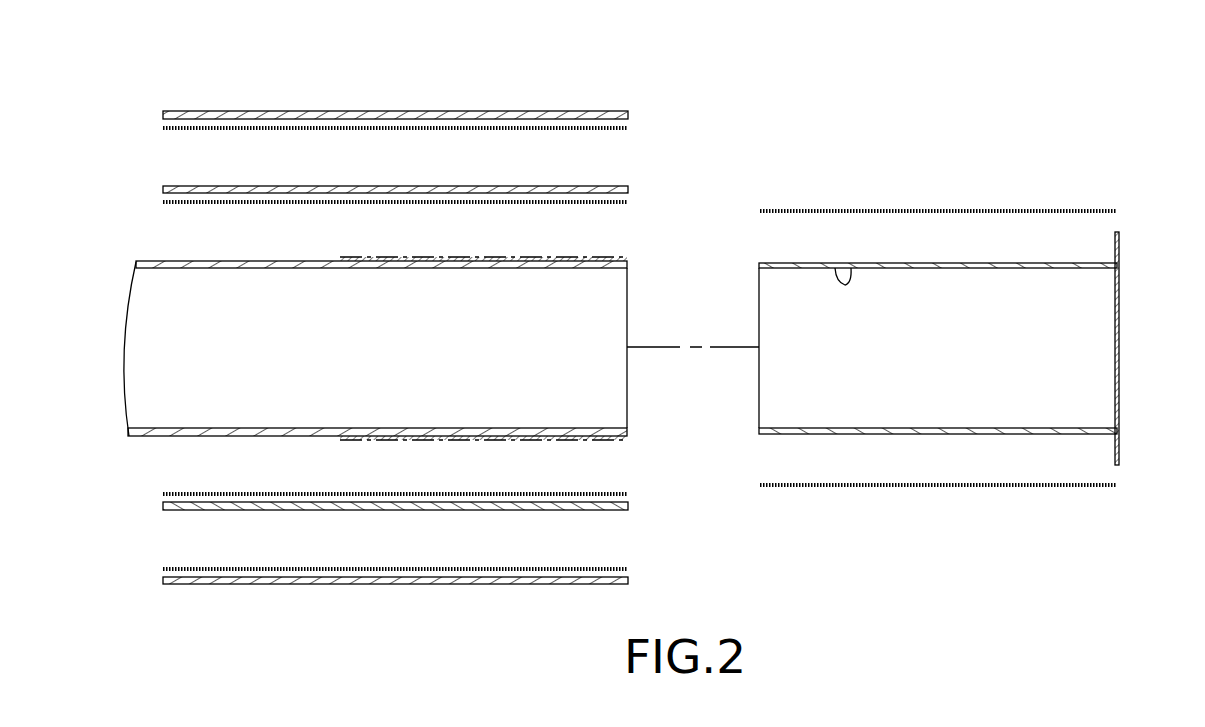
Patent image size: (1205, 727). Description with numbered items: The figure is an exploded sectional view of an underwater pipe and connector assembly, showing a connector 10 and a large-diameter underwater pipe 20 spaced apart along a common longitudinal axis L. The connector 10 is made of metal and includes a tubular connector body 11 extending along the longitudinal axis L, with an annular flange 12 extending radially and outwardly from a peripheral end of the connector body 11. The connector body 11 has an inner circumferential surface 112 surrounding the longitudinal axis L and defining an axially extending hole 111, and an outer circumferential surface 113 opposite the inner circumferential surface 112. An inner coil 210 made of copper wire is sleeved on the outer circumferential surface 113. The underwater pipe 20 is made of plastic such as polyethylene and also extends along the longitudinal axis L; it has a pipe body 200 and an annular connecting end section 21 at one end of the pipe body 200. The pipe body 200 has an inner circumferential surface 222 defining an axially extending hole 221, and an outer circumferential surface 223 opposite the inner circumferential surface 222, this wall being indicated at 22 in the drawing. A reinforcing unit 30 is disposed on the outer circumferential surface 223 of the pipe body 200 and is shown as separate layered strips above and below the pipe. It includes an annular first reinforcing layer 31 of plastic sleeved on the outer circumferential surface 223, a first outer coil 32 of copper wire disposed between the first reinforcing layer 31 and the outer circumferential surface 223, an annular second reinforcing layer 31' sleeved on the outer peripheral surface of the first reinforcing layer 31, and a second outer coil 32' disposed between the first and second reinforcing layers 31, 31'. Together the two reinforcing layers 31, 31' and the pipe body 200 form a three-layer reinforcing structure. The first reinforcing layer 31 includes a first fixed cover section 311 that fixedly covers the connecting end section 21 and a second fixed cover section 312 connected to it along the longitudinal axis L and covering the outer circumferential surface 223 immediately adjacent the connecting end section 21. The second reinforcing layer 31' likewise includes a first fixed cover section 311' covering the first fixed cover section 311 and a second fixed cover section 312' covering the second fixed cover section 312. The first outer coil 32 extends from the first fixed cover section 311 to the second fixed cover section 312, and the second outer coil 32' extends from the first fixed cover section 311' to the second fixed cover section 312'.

The connector 10 is at (976, 315).
The connector body 11 is at (1071, 266).
The annular flange 12 is at (1120, 250).
The axially extending hole 111 is at (1077, 350).
The inner circumferential surface 112 is at (851, 268).
The outer circumferential surface 113 is at (895, 263).
The inner coil 210 is at (778, 211).
The large-diameter underwater pipe 20 is at (371, 352).
The annular connecting end section 21 is at (590, 258).
The tube wall of second tube 22 is at (238, 265).
The pipe body 200 is at (150, 262).
The axially extending hole 221 is at (157, 362).
The inner circumferential surface 222 is at (182, 268).
The outer circumferential surface 223 is at (175, 265).
The reinforcing unit 30 is at (246, 112).
The first reinforcing layer 31 is at (395, 165).
The first outer coil 32 is at (395, 172).
The first fixed cover section 311 is at (633, 169).
The second fixed cover section 312 is at (162, 166).
The second reinforcing layer 31' is at (330, 80).
The second outer coil 32' is at (404, 92).
The first fixed cover section 311' is at (608, 77).
The second fixed cover section 312' is at (173, 78).
The longitudinal axis L is at (717, 352).